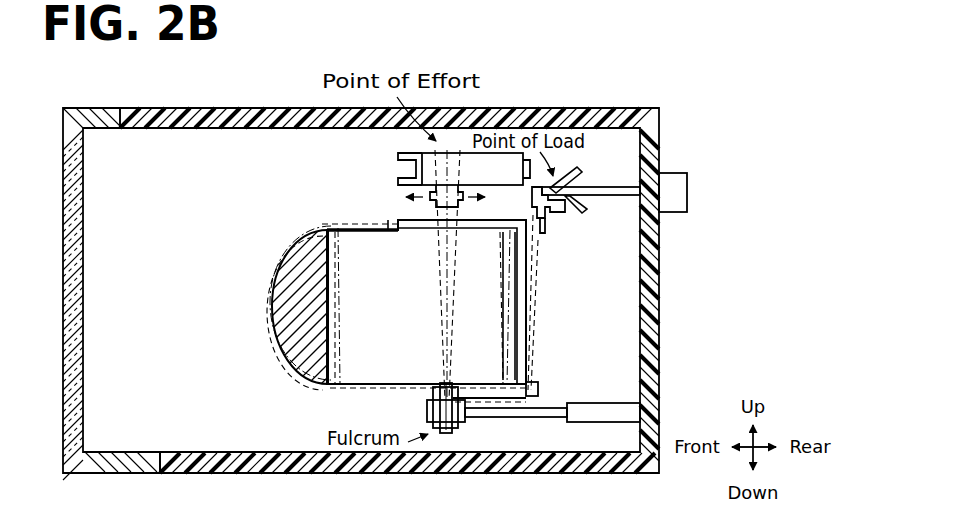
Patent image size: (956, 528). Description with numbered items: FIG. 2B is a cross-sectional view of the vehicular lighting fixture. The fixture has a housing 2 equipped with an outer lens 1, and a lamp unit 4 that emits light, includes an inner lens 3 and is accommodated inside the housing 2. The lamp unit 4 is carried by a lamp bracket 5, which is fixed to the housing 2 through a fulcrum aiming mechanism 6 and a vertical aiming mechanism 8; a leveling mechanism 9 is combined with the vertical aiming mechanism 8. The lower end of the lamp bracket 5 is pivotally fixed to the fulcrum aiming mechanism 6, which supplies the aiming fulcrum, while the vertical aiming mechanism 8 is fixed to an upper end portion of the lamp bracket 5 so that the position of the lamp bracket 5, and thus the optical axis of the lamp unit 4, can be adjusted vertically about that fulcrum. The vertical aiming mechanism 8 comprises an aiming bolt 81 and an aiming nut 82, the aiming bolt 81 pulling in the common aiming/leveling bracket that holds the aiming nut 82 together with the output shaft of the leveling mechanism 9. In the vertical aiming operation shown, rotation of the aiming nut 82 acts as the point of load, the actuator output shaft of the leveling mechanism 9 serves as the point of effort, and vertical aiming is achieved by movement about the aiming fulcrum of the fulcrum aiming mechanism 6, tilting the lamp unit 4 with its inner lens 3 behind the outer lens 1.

The outer lens 1 is at (108, 107).
The housing 2 is at (288, 108).
The inner lens 3 is at (288, 293).
The lamp unit 4 is at (358, 253).
The lamp bracket 5 is at (538, 390).
The fulcrum aiming mechanism 6 is at (427, 412).
The vertical aiming mechanism 8 is at (569, 168).
The aiming bolt 81 is at (672, 173).
The aiming nut 82 is at (573, 209).
The leveling mechanism 9 is at (457, 141).